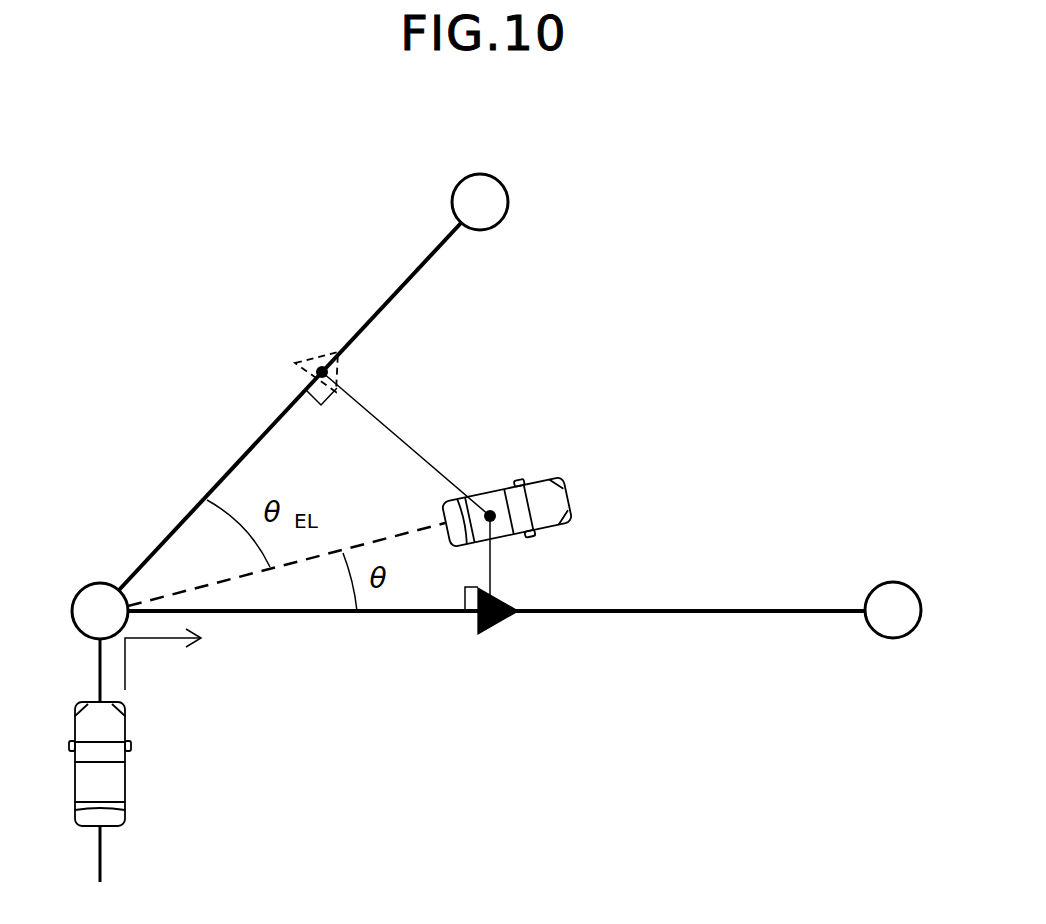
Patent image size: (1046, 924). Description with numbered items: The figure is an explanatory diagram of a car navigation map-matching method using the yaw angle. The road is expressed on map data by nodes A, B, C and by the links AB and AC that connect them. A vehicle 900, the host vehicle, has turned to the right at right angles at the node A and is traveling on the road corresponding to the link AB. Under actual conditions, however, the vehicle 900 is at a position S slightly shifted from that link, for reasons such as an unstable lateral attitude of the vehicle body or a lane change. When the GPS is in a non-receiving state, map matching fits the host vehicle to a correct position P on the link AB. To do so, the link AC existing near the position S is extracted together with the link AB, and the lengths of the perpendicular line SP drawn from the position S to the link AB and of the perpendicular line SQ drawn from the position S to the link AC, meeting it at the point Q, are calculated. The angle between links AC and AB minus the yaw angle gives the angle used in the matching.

The vehicle 900 is at (570, 498).
The node A is at (100, 593).
The node B is at (893, 631).
The node C is at (462, 202).
The position P is at (491, 627).
The point Q is at (315, 361).
The position S is at (480, 486).